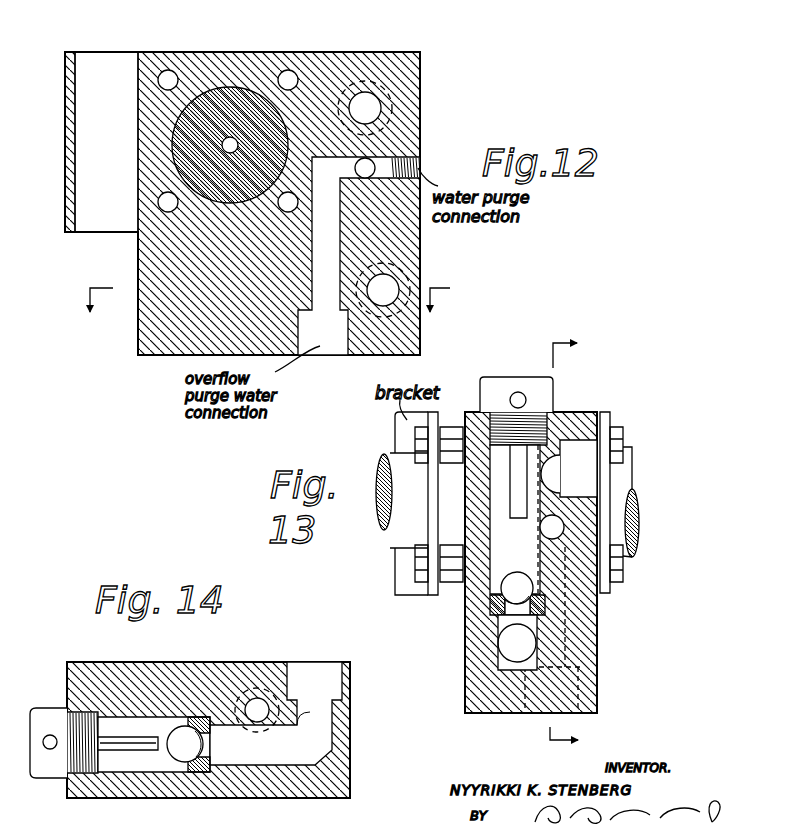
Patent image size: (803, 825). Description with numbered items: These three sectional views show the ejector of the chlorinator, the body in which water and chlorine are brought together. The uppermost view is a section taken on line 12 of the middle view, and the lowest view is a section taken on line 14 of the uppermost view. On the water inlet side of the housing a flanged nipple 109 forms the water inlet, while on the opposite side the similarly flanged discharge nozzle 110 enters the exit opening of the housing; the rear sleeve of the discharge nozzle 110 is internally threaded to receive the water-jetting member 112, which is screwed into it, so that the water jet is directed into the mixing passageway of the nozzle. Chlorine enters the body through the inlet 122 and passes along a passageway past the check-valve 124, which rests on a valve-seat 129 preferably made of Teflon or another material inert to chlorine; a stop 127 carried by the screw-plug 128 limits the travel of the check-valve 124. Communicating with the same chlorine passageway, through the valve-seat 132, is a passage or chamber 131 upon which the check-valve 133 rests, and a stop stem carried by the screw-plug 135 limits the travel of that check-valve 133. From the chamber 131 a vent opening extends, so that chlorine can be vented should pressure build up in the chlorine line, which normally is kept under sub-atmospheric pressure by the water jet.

In FIG. 12, the water-jetting member 112 is at (230, 98).
In FIG. 12, the inlet 122 is at (392, 290).
In FIG. 12, the section line 14— 14 is at (270, 314).
In FIG. 13, the section line 12— 12 is at (582, 546).
In FIG. 13, the flanged nipple 109 is at (633, 465).
In FIG. 13, the discharge nozzle 110 is at (383, 529).
In FIG. 13, the passage or chamber 131 is at (516, 494).
In FIG. 13, the valve-seat 132 is at (498, 605).
In FIG. 13, the check-valve 133 is at (516, 582).
In FIG. 13, the screw-plug 135 is at (547, 397).
In FIG. 14, the check-valve 124 is at (178, 748).
In FIG. 14, the stop 127 is at (110, 740).
In FIG. 14, the screw-plug 128 is at (45, 775).
In FIG. 14, the valve-seat 129 is at (210, 753).